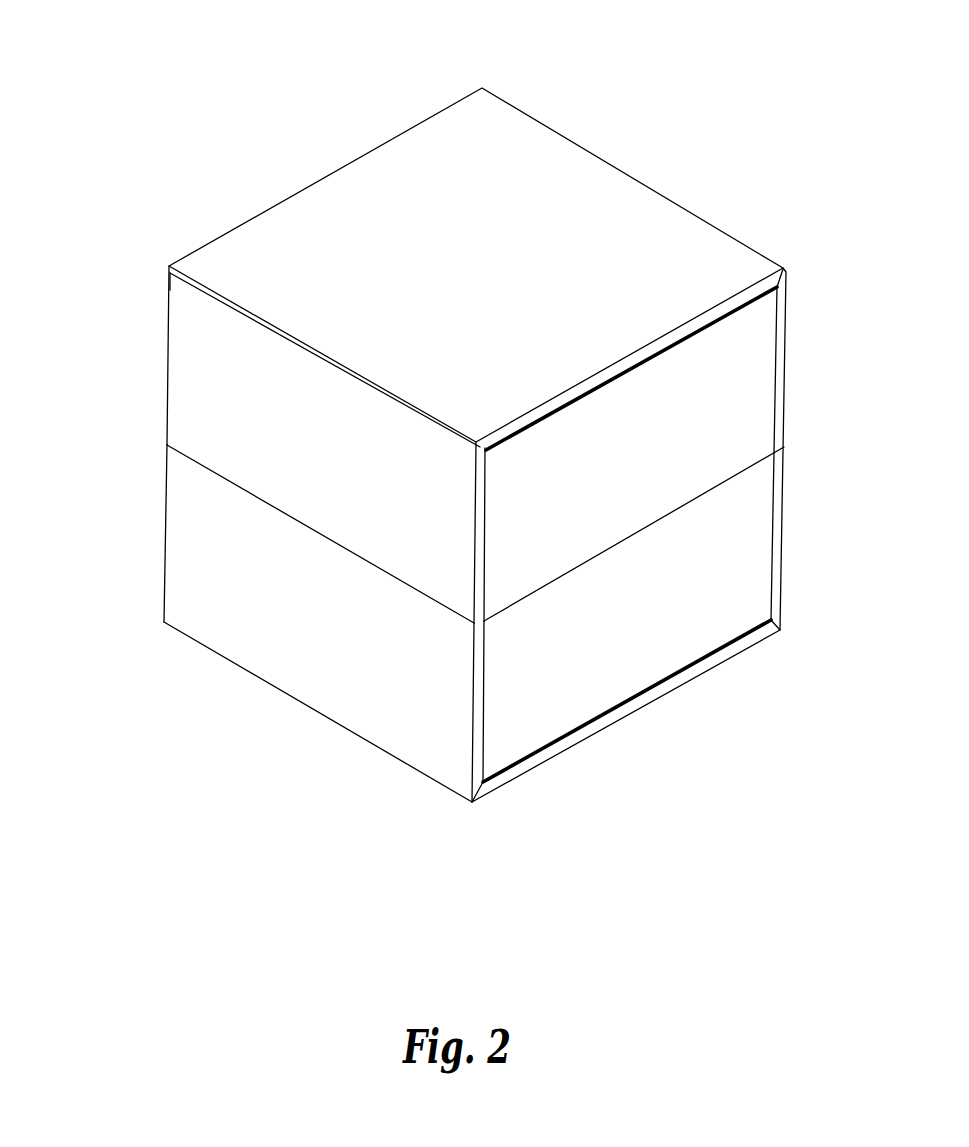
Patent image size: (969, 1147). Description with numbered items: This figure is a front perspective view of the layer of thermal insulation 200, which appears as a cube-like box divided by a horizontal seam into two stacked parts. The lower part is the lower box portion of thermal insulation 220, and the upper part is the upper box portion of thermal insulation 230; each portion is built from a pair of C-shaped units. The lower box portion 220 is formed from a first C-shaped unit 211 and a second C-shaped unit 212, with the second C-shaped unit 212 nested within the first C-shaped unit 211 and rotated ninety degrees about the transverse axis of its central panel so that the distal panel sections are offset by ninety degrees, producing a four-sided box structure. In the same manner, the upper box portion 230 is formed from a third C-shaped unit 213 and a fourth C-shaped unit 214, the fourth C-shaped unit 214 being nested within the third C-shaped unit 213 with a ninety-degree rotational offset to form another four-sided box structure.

The layer of thermal insulation 200 is at (730, 89).
The first C-shaped unit 211 is at (320, 682).
The second C-shaped unit 212 is at (677, 640).
The third C-shaped unit 213 is at (327, 203).
The fourth C-shaped unit 214 is at (757, 380).
The lower box portion of thermal insulation 220 is at (805, 551).
The upper box portion of thermal insulation 230 is at (145, 345).